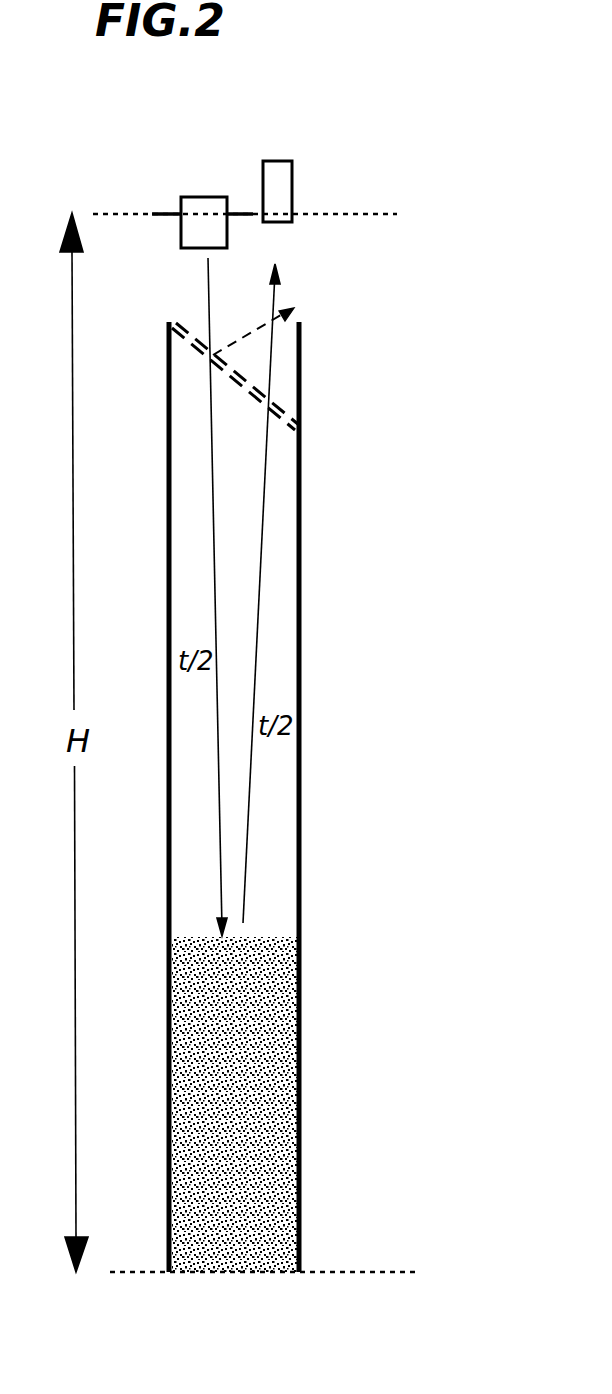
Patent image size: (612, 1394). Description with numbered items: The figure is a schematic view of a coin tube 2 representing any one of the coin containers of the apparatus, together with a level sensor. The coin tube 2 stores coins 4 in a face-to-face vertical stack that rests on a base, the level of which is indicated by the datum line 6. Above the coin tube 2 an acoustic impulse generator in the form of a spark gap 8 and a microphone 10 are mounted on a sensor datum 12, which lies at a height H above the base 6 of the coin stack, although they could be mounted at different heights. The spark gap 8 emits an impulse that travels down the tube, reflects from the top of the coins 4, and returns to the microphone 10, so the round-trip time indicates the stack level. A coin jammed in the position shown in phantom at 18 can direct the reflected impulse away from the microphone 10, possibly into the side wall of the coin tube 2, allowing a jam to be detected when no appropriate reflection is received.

The coin tube 2 is at (298, 754).
The coins 4 is at (297, 1163).
The datum line 6 is at (390, 1270).
The spark gap 8 is at (199, 197).
The microphone 10 is at (277, 161).
The sensor datum 12 is at (370, 213).
The jammed coin 18 is at (247, 392).